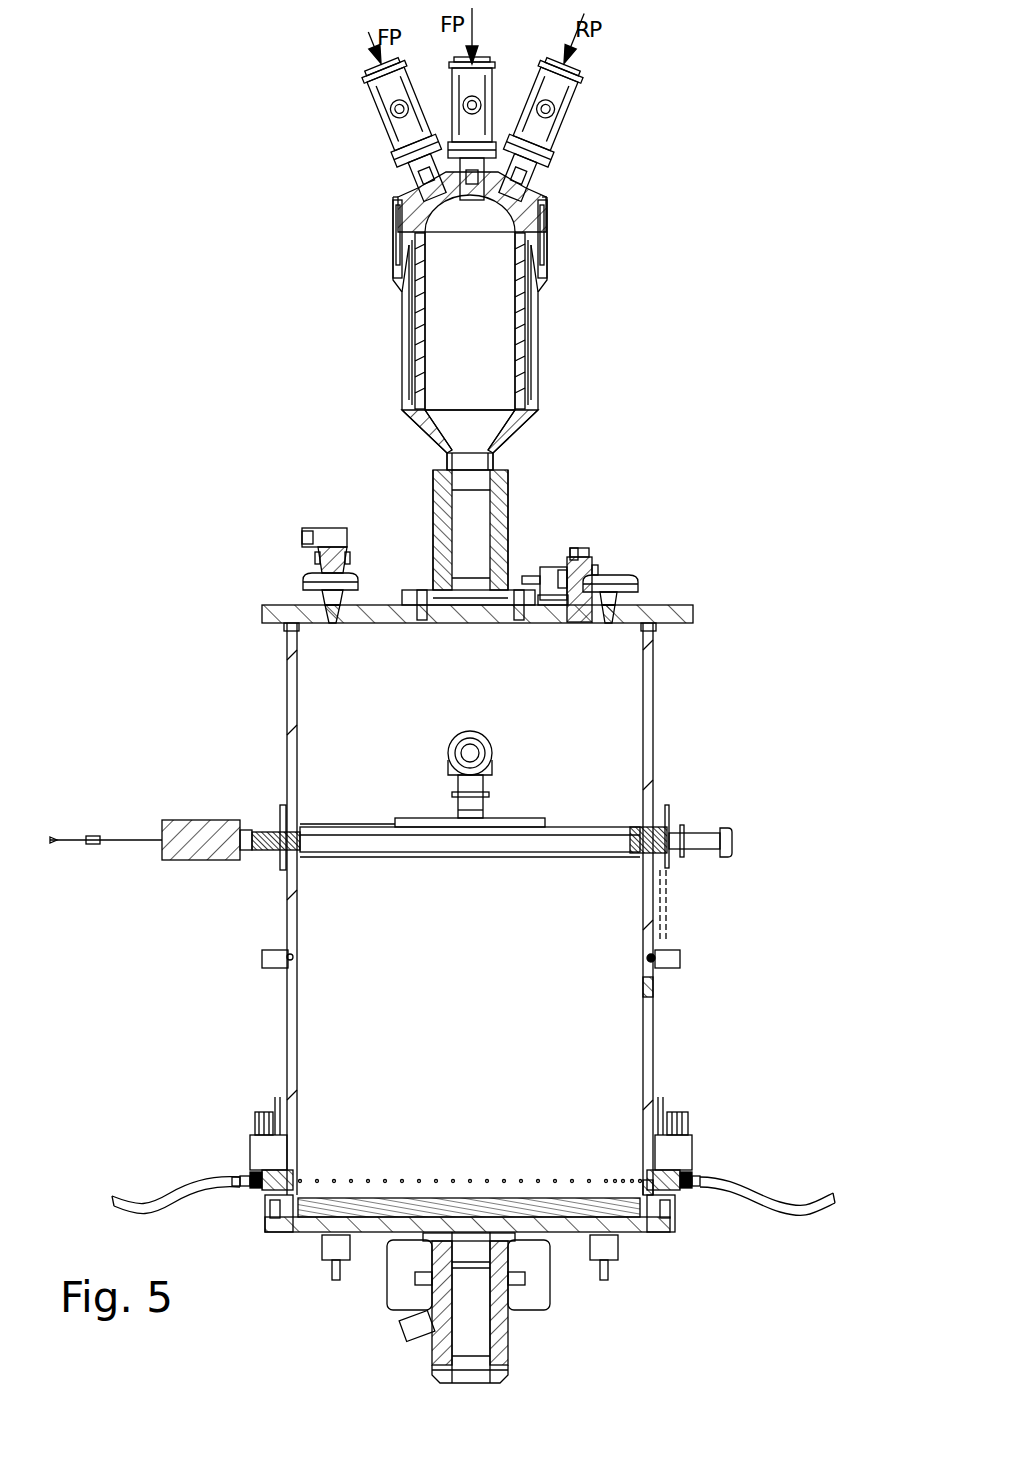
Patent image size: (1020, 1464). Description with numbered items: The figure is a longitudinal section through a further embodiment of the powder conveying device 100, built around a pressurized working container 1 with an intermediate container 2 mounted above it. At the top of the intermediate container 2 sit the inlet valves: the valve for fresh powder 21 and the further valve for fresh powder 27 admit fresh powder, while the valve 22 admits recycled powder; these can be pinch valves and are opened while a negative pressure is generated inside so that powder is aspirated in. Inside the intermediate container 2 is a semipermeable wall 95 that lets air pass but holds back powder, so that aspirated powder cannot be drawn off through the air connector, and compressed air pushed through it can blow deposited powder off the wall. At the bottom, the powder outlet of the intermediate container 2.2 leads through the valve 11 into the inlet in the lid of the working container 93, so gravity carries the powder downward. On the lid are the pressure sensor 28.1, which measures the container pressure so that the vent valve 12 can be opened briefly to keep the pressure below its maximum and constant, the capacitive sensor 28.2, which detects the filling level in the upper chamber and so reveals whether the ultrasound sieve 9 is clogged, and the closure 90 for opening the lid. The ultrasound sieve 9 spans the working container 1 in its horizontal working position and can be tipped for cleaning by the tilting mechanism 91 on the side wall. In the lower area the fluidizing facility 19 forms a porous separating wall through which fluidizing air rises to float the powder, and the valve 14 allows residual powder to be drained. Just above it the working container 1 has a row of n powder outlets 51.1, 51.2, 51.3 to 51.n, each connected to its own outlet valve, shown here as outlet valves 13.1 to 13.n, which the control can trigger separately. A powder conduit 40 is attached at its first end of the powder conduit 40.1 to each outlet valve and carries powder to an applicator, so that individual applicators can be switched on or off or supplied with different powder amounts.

The working container 1 is at (252, 712).
The intermediate container 2 is at (380, 320).
The powder outlet of the intermediate container 2.2 is at (470, 440).
The ultrasound sieve 9 is at (335, 817).
The valve 11 is at (433, 522).
The vent valve 12 is at (552, 565).
The outlet valve 13.1 is at (686, 1110).
The outlet valve 13.n is at (258, 1110).
The valve 14 is at (510, 1350).
The fluidizing facility 19 is at (312, 1225).
The valve for fresh powder 21 is at (373, 118).
The valve 22 is at (569, 110).
The valve for fresh powder 27 is at (487, 80).
The pressure sensor 28.1 is at (320, 530).
The sensor 28.2 is at (592, 558).
The powder conduit 40 is at (118, 1190).
The first end of the powder conduit 40.1 is at (206, 1177).
The powder outlet 51.1 is at (641, 1178).
The powder outlet 51.2 is at (640, 1180).
The powder outlet 51.3 is at (640, 1181).
The powder outlet 51.n is at (300, 1180).
The closure 90 is at (300, 582).
The tilting mechanism 91 is at (730, 834).
The lid of the working container 93 is at (693, 603).
The semipermeable wall 95 is at (412, 370).
The powder conveying device 100 is at (245, 492).